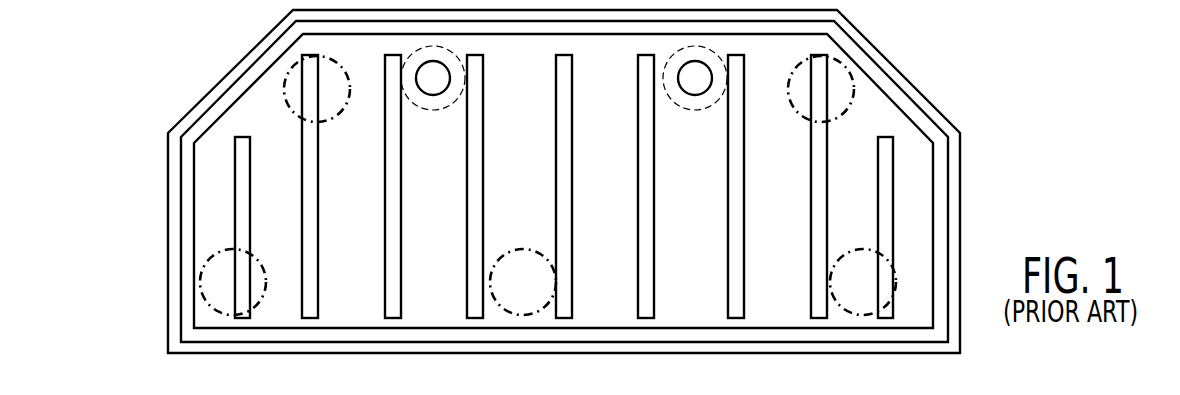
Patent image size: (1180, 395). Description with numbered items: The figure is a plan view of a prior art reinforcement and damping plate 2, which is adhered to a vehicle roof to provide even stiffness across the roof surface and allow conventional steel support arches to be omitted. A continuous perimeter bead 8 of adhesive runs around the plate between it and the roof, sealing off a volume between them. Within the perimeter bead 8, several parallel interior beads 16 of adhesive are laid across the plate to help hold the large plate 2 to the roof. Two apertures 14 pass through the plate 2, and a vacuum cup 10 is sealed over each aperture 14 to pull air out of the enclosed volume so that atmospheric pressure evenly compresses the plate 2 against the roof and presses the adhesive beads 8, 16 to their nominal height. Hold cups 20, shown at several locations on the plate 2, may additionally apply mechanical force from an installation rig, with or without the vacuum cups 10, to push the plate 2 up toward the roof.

The reinforcement and damping plate 2 is at (953, 52).
The perimeter bead 8 is at (237, 95).
The vacuum cup 10 is at (457, 102).
The aperture 14 is at (434, 78).
The interior bead 16 is at (245, 190).
The hold cup 20 is at (212, 256).